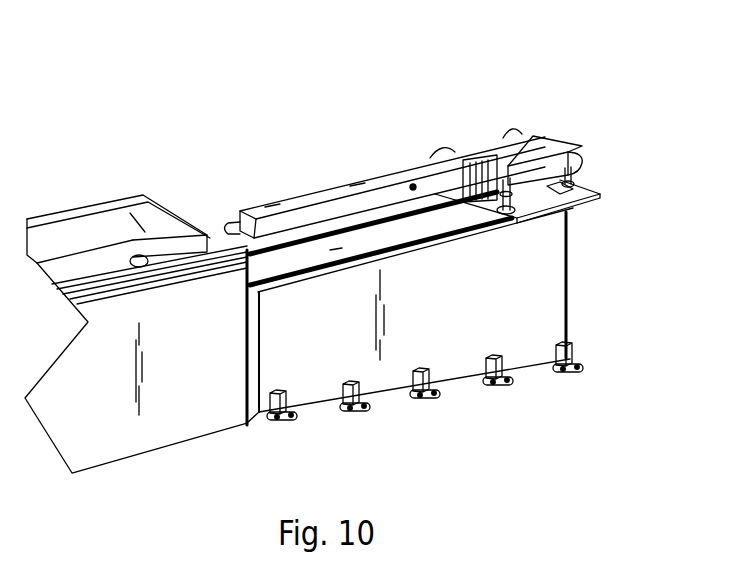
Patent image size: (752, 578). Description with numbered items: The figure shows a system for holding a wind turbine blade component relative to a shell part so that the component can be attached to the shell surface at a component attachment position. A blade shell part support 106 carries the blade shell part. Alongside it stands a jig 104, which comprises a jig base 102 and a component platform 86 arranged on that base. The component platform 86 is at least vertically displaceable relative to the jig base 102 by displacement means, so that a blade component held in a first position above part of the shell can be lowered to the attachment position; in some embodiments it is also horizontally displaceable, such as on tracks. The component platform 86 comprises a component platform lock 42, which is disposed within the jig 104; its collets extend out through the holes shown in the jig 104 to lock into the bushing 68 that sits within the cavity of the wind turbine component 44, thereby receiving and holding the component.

The component platform lock 42 is at (409, 165).
The wind turbine component 44 is at (197, 235).
The bushing 68 is at (122, 248).
The component platform 86 is at (345, 145).
The jig base 102 is at (568, 255).
The jig 104 is at (597, 175).
The blade shell part support 106 is at (157, 198).